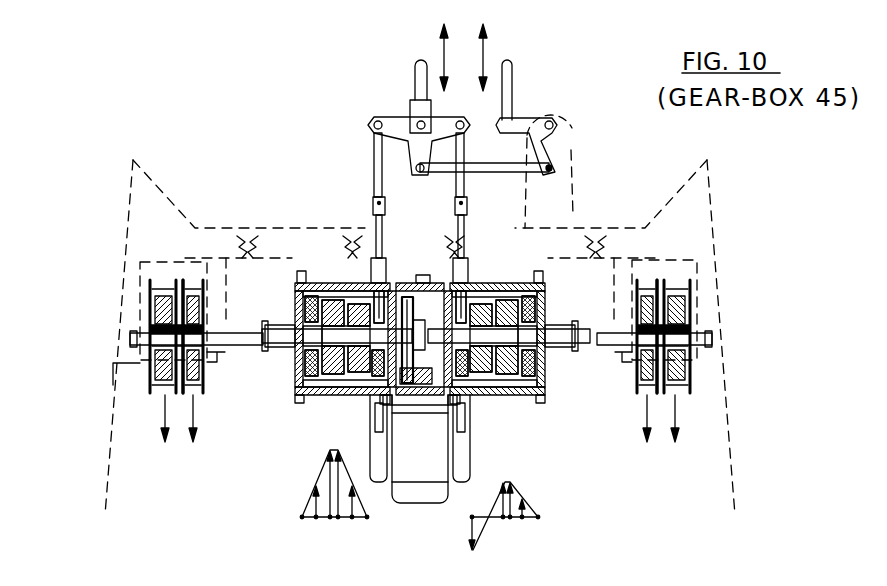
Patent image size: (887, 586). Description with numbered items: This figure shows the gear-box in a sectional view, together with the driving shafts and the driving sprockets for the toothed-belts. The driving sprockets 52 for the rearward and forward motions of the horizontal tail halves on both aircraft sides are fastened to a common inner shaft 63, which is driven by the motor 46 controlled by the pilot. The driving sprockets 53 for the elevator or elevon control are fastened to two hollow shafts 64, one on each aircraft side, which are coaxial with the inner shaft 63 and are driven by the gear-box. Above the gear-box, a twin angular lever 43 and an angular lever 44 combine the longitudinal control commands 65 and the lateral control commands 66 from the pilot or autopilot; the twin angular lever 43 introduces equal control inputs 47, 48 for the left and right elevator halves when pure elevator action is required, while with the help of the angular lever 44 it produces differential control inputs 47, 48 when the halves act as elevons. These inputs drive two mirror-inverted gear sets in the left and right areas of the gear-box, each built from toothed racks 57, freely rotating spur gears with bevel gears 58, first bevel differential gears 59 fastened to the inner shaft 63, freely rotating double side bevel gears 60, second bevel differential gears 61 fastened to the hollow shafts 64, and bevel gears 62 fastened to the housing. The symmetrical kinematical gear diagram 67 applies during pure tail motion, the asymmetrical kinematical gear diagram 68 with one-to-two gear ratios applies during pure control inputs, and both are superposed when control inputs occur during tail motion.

The twin angular lever 43 is at (395, 119).
The angular lever 44 is at (567, 128).
The motor for horizontal tail motion 46 is at (421, 470).
The control input for the left elevator half or the left elevon 47 is at (382, 233).
The control input for the right elevator half or the right elevon 48 is at (455, 238).
The driving sprockets for horizontal tail motions 52 is at (150, 373).
The driving sprockets for elevator or elevon control 53 is at (423, 394).
The toothed racks 57 is at (467, 255).
The freely rotating spur gears with bevel gears 58 is at (420, 277).
The first bevel differential gears 59 is at (335, 395).
The freely rotating double side bevel gears 60 is at (512, 295).
The second bevel differential gears 61 is at (420, 361).
The bevel gears fastened to the housing 62 is at (297, 302).
The common inner shaft 63 is at (130, 337).
The hollow shafts 64 is at (424, 415).
The longitudinal control commands from the pilot or autopilot 65 is at (415, 78).
The lateral control commands from the pilot or autopilot 66 is at (512, 80).
The kinematical gear diagram for rearward and forward motions of the horizontal tail 67 is at (333, 519).
The kinematical gear diagram for control commands 68 is at (510, 520).